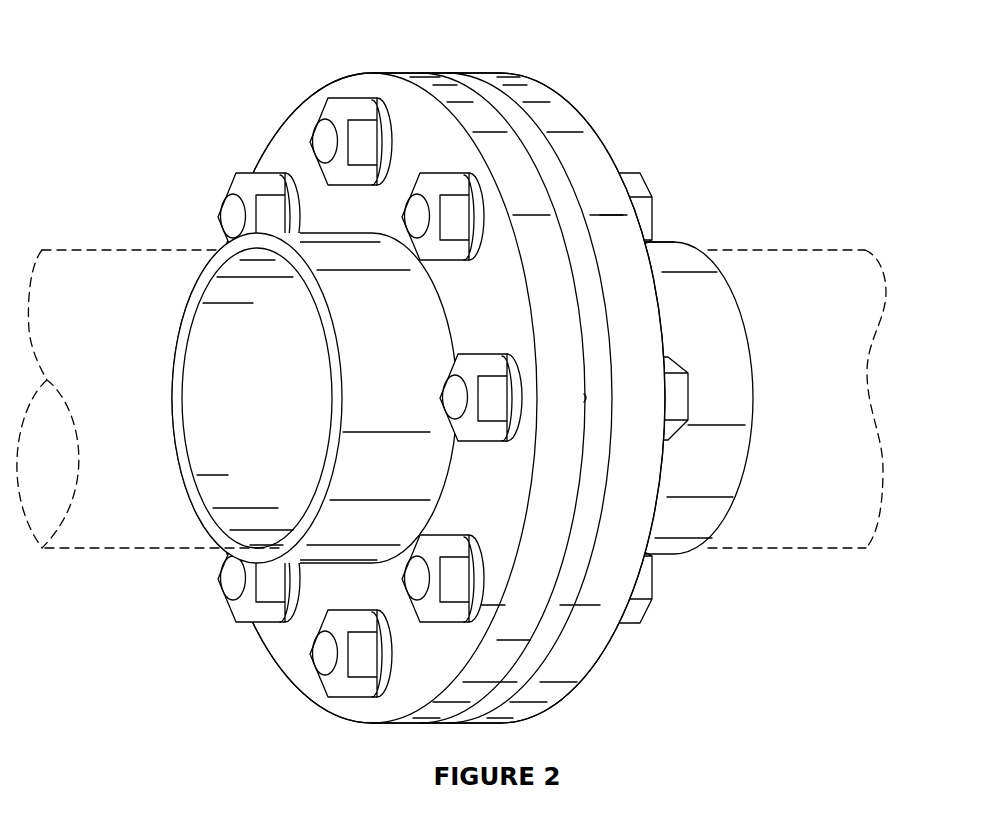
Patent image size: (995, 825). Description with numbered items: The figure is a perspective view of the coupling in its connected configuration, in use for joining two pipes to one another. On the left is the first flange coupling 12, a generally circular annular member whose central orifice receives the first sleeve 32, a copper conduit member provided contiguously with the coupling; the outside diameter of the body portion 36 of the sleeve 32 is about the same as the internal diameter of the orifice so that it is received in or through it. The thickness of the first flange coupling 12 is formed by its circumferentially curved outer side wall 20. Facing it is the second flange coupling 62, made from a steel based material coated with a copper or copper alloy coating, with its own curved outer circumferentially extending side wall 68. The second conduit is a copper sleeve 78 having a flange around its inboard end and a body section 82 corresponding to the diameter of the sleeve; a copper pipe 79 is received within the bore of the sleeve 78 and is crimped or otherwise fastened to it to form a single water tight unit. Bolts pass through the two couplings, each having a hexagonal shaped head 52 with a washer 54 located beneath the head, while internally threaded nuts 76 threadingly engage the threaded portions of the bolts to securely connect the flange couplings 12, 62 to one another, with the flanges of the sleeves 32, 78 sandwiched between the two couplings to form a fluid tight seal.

The first flange coupling 12 is at (410, 73).
The outer side wall 20 is at (447, 690).
The first sleeve 32 is at (334, 250).
The body portion 36 is at (224, 247).
The hexagonal shaped head 52 is at (324, 121).
The washer 54 is at (453, 134).
The second flange coupling 62 is at (556, 92).
The outer side wall 68 is at (585, 657).
The nut 76 is at (636, 186).
The second sleeve 78 is at (659, 263).
The pipe 79 is at (804, 250).
The body section 82 is at (694, 518).